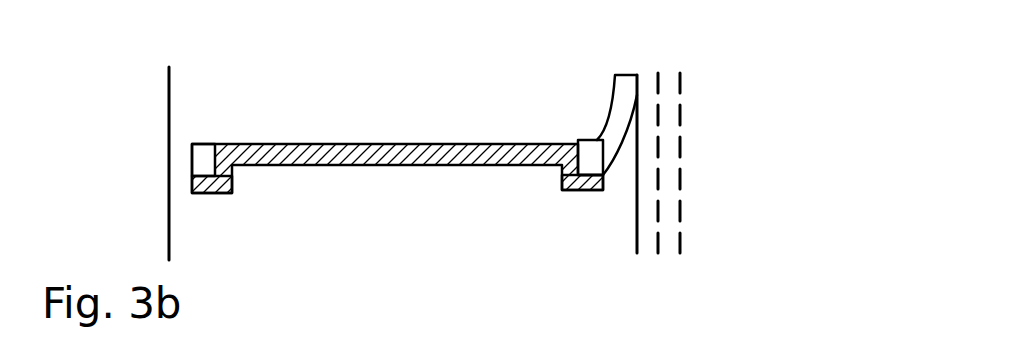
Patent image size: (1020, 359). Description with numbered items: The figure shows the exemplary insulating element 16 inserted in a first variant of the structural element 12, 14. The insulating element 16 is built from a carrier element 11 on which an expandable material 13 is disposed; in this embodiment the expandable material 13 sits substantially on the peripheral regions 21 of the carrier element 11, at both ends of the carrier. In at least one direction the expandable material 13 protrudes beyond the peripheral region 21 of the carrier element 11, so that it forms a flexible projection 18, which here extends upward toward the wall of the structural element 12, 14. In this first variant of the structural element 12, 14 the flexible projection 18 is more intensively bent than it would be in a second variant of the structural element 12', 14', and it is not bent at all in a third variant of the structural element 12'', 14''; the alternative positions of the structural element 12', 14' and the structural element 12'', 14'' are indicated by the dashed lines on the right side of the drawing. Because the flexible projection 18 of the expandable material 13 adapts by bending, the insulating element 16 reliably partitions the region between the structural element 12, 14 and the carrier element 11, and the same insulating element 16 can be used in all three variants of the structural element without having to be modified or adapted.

The carrier element 11 is at (413, 165).
The structural element 12 is at (106, 163).
The structural element 14 is at (106, 163).
The structural element 12' is at (731, 163).
The structural element 14' is at (731, 163).
The structural element 12'' is at (751, 163).
The structural element 14'' is at (751, 163).
The expandable material 13 is at (205, 155).
The insulating element 16 is at (414, 142).
The flexible projection 18 is at (620, 95).
The peripheral region 21 is at (212, 195).